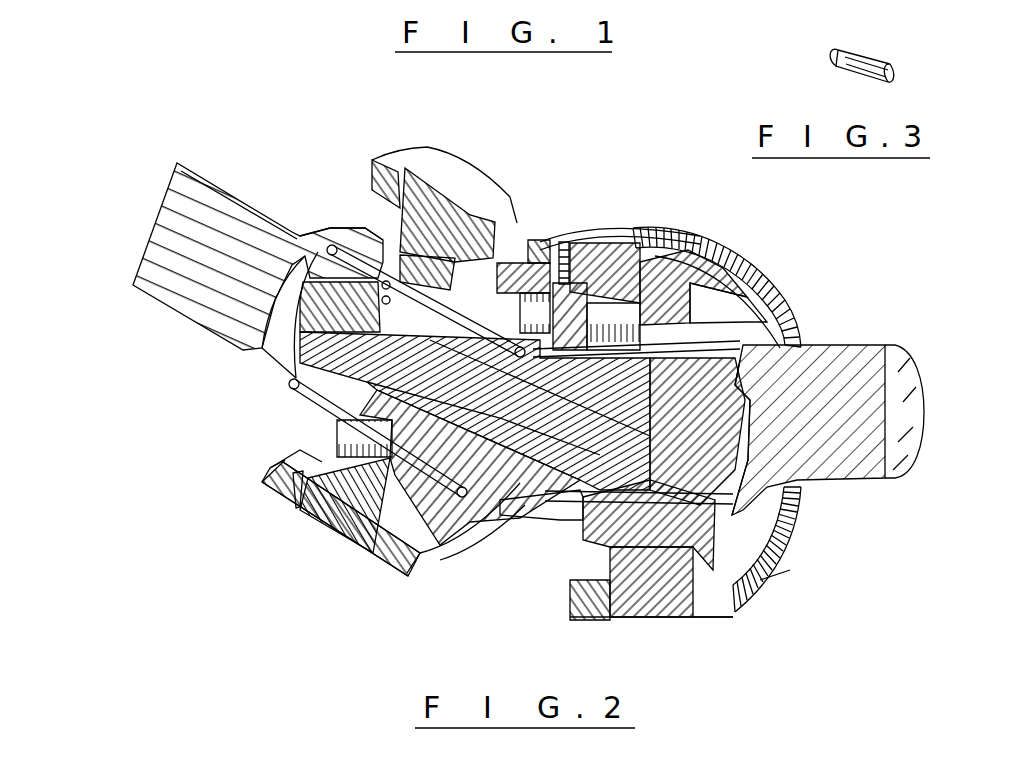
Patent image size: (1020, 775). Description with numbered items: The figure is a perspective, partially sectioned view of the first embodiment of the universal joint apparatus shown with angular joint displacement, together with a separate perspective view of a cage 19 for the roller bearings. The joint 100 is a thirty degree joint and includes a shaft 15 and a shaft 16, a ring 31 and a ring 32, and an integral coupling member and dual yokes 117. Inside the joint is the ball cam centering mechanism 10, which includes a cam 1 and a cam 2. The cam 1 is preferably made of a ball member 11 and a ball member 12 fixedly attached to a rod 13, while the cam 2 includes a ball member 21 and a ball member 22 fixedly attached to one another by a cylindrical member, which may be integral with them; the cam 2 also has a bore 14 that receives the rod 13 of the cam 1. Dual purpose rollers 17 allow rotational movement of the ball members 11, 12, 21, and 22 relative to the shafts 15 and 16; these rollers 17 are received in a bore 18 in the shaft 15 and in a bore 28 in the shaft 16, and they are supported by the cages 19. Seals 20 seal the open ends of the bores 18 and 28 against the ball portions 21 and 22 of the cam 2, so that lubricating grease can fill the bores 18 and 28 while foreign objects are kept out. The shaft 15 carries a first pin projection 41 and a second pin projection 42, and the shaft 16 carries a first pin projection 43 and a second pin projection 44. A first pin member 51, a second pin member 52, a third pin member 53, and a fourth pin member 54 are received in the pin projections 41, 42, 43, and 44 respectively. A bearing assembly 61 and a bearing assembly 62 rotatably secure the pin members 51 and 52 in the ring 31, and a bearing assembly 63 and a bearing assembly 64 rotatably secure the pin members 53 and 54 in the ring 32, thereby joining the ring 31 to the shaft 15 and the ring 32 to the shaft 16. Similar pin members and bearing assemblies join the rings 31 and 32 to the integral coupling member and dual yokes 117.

In FIG. 2, the cam 1 is at (735, 345).
In FIG. 2, the cam 2 is at (520, 513).
In FIG. 2, the ball cam centering mechanism 10 is at (338, 96).
In FIG. 2, the ball member 11 is at (292, 404).
In FIG. 2, the ball member 12 is at (768, 576).
In FIG. 2, the rod 13 is at (735, 322).
In FIG. 2, the bore 14 is at (343, 490).
In FIG. 2, the shaft 15 is at (197, 183).
In FIG. 2, the shaft 16 is at (870, 470).
In FIG. 2, the dual purpose rollers 17 is at (518, 240).
In FIG. 2, the bore 18 is at (300, 430).
In FIG. 2, the cage 19 is at (303, 450).
In FIG. 3, the cage 19 is at (868, 48).
In FIG. 2, the seal 20 is at (560, 236).
In FIG. 2, the ball member 21 is at (353, 553).
In FIG. 2, the ball member 22 is at (525, 560).
In FIG. 2, the bore 28 is at (577, 527).
In FIG. 2, the ring 31 is at (425, 568).
In FIG. 2, the ring 32 is at (740, 608).
In FIG. 2, the first pin projection 41 is at (383, 233).
In FIG. 2, the second pin projection 42 is at (287, 473).
In FIG. 2, the first pin projection 43 is at (713, 238).
In FIG. 2, the second pin projection 44 is at (740, 568).
In FIG. 2, the first pin member 51 is at (440, 217).
In FIG. 2, the second pin member 52 is at (360, 517).
In FIG. 2, the third pin member 53 is at (620, 263).
In FIG. 2, the fourth pin member 54 is at (660, 590).
In FIG. 2, the bearing assembly 61 is at (430, 177).
In FIG. 2, the bearing assembly 62 is at (282, 524).
In FIG. 2, the bearing assembly 63 is at (617, 226).
In FIG. 2, the bearing assembly 64 is at (610, 620).
In FIG. 2, the joint 100 is at (176, 342).
In FIG. 2, the integral coupling member and dual yokes 117 is at (727, 317).